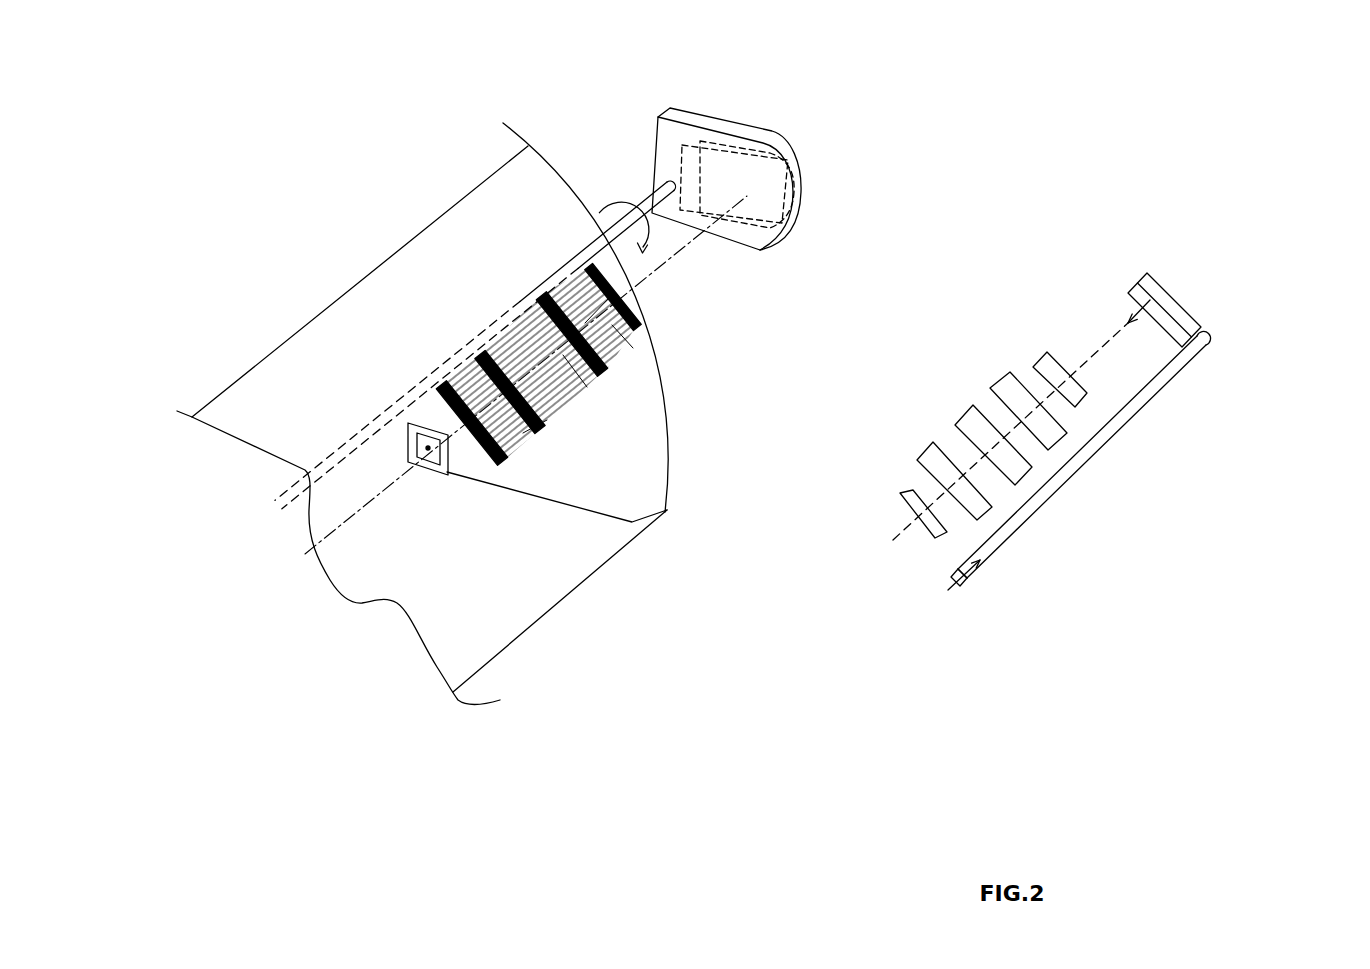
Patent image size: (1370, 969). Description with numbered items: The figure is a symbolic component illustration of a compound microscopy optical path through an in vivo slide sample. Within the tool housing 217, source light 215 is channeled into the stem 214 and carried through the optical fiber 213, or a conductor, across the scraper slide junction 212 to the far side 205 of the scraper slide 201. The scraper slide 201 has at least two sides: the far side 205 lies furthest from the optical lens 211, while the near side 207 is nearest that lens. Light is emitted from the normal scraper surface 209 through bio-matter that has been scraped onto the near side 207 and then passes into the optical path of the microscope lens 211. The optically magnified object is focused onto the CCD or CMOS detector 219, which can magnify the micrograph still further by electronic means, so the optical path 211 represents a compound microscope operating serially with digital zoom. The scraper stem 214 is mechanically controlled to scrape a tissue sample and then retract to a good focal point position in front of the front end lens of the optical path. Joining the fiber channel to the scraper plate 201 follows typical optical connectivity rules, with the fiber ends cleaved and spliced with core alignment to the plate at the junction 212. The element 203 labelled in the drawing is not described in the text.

The scraper slide 201 is at (683, 139).
The camera module 203 is at (743, 154).
The far side 205 is at (999, 250).
The near side 207 is at (893, 199).
The normal scraper surface 209 is at (926, 387).
The optical lens 211 is at (761, 400).
The scraper slide junction 212 is at (1257, 312).
The optical fiber 213 is at (1082, 457).
The stem 214 is at (475, 334).
The source light 215 is at (965, 608).
The tool housing 217 is at (422, 414).
The CCD or CMOS detector 219 is at (652, 467).